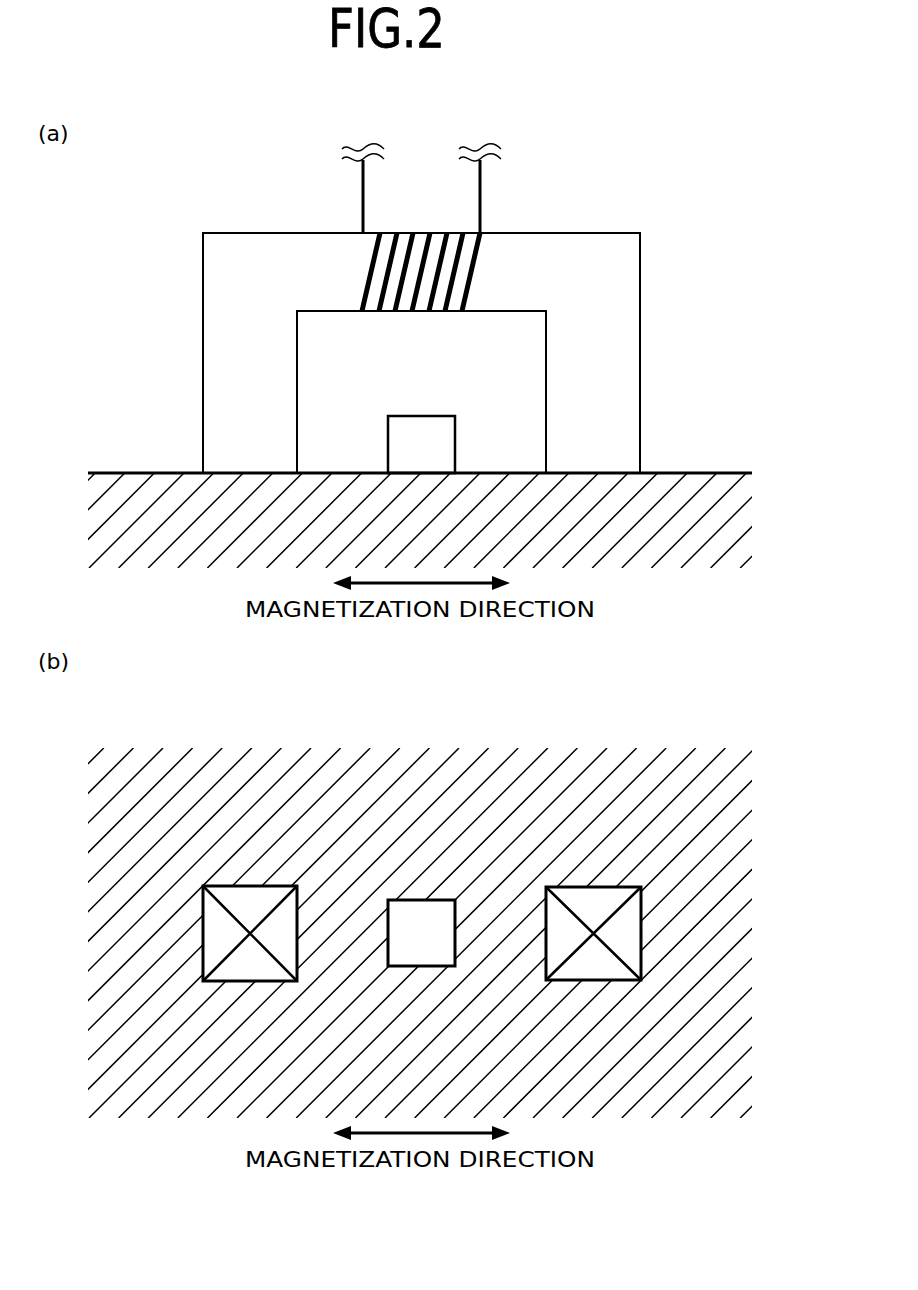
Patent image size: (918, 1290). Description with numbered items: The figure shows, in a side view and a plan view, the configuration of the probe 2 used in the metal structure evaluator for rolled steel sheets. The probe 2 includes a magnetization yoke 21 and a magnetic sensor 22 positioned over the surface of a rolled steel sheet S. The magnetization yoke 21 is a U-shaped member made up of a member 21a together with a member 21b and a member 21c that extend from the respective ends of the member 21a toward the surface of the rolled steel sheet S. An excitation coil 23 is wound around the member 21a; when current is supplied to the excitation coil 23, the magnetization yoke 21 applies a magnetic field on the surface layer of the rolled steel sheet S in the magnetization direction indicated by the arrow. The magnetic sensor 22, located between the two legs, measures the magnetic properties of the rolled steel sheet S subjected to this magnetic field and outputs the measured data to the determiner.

The probe 2 is at (420, 562).
The magnetization yoke 21 is at (237, 233).
The member 21a is at (333, 312).
The member 21b is at (203, 355).
The member 21c is at (641, 350).
The magnetic sensor 22 is at (421, 416).
The excitation coil 23 is at (482, 191).
The rolled steel sheet S is at (708, 473).